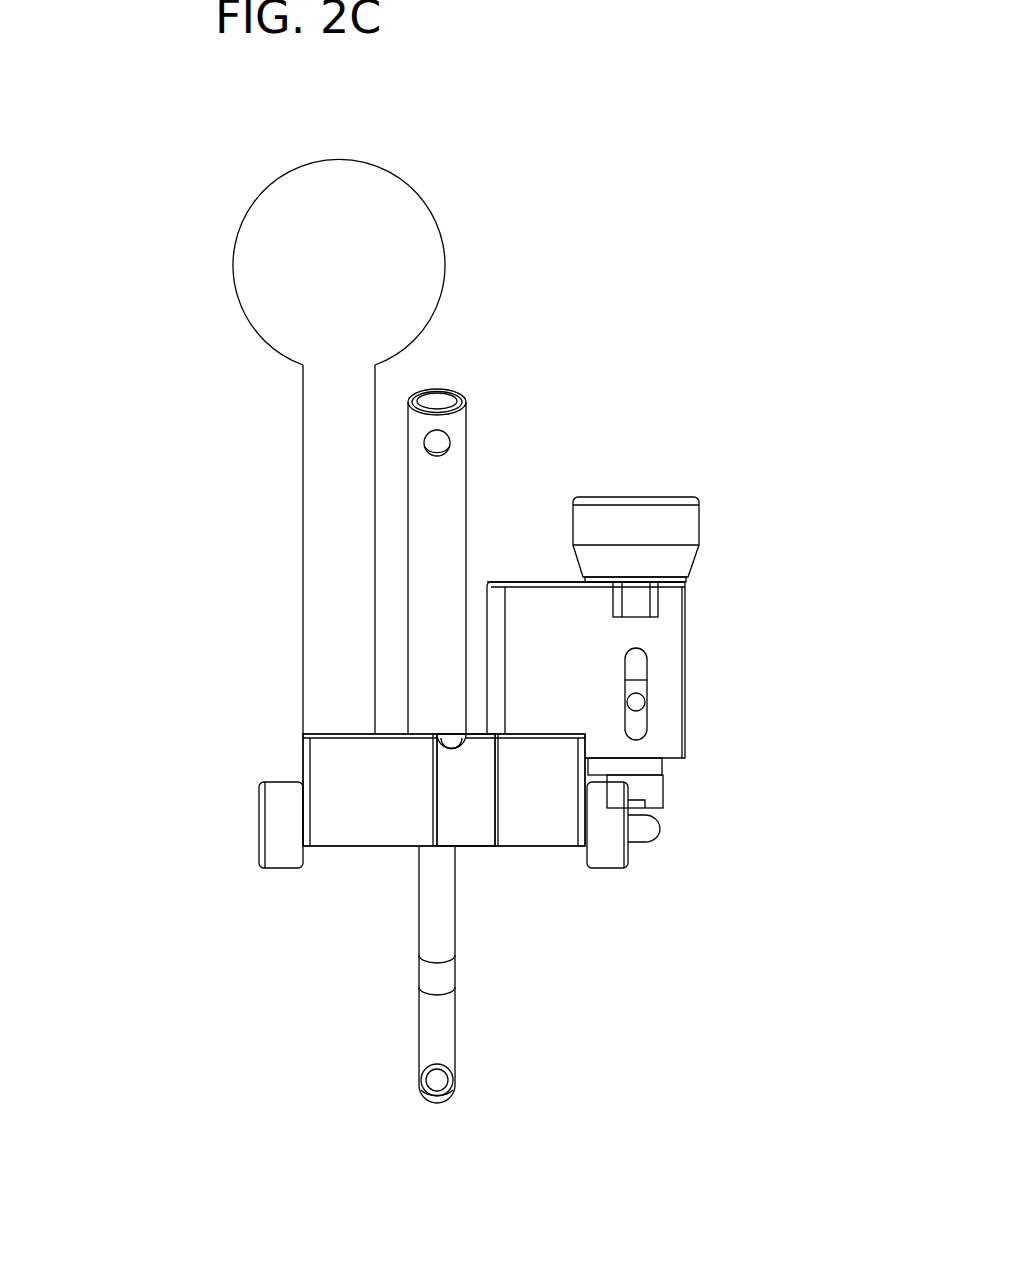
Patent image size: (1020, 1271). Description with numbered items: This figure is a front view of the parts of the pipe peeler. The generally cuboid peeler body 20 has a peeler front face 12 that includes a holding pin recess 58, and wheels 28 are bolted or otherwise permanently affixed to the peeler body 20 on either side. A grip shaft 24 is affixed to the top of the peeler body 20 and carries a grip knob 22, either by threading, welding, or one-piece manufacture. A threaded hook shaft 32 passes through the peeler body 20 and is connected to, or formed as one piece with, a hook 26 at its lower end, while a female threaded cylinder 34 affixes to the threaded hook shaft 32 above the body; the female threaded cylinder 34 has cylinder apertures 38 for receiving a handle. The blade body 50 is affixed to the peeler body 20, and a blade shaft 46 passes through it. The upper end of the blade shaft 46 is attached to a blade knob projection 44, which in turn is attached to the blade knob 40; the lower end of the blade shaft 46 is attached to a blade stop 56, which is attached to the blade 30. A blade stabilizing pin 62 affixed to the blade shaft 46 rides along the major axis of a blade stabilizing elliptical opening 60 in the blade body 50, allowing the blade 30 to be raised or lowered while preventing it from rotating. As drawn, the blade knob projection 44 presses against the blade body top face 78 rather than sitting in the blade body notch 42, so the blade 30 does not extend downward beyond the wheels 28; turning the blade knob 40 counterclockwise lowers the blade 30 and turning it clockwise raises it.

The peeler front face 12 is at (378, 813).
The peeler body 20 is at (300, 755).
The grip knob 22 is at (267, 183).
The grip shaft 24 is at (300, 428).
The hook 26 is at (419, 1043).
The wheels 28 is at (265, 828).
The blade 30 is at (650, 843).
The threaded hook shaft 32 is at (419, 912).
The female threaded cylinder 34 is at (468, 500).
The cylinder apertures 38 is at (440, 440).
The blade knob 40 is at (702, 513).
The blade body notch 42 is at (658, 605).
The blade knob projection 44 is at (697, 563).
The blade shaft 46 is at (660, 763).
The blade body 50 is at (686, 628).
The blade stop 56 is at (668, 787).
The holding pin recess 58 is at (470, 790).
The blade stabilizing elliptical opening 60 is at (640, 667).
The blade stabilizing pin 62 is at (642, 702).
The blade body top face 78 is at (536, 580).